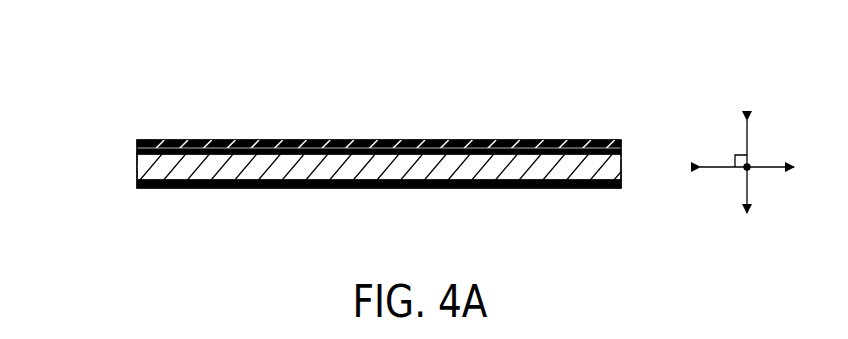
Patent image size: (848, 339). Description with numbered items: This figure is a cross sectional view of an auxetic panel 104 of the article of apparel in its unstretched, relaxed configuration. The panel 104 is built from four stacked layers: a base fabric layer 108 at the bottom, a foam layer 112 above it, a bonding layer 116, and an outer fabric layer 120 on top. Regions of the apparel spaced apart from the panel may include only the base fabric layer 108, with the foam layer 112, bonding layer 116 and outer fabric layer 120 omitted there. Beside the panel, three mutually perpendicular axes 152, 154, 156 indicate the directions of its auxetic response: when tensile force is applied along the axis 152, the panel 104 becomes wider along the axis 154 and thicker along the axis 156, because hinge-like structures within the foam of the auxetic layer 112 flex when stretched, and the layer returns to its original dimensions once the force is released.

The auxetic panel 104 is at (502, 116).
The base fabric layer 108 is at (167, 188).
The foam layer 112 is at (137, 167).
The bonding layer 116 is at (137, 150).
The outer fabric layer 120 is at (158, 140).
The axis 152 is at (716, 162).
The axis 154 is at (749, 164).
The axis 156 is at (743, 200).